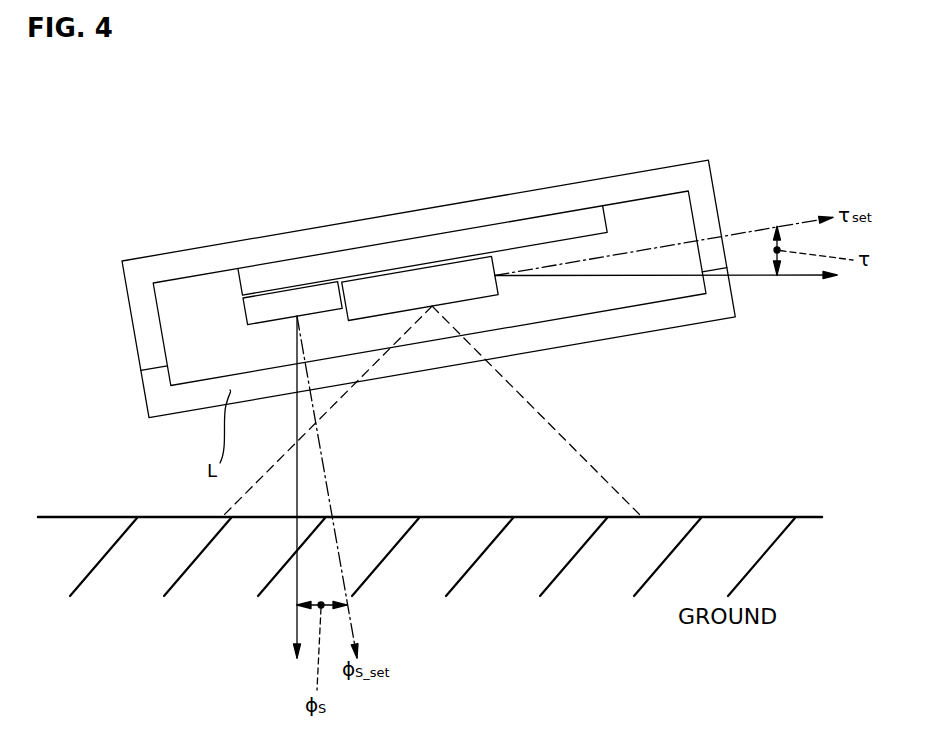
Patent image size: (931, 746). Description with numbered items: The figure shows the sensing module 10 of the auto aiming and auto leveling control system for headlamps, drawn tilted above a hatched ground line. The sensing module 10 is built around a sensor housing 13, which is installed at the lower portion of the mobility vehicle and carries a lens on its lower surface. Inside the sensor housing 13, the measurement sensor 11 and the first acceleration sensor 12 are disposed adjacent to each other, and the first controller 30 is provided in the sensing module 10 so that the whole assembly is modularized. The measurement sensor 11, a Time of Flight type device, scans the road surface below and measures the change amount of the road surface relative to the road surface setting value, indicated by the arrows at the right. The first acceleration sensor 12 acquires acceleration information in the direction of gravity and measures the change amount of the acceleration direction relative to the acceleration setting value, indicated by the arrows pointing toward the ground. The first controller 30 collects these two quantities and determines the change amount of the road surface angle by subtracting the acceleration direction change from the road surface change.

The sensing module 10 is at (362, 203).
The measurement sensor 11 is at (443, 282).
The first acceleration sensor 12 is at (290, 304).
The sensor housing 13 is at (192, 261).
The first controller 30 is at (537, 228).